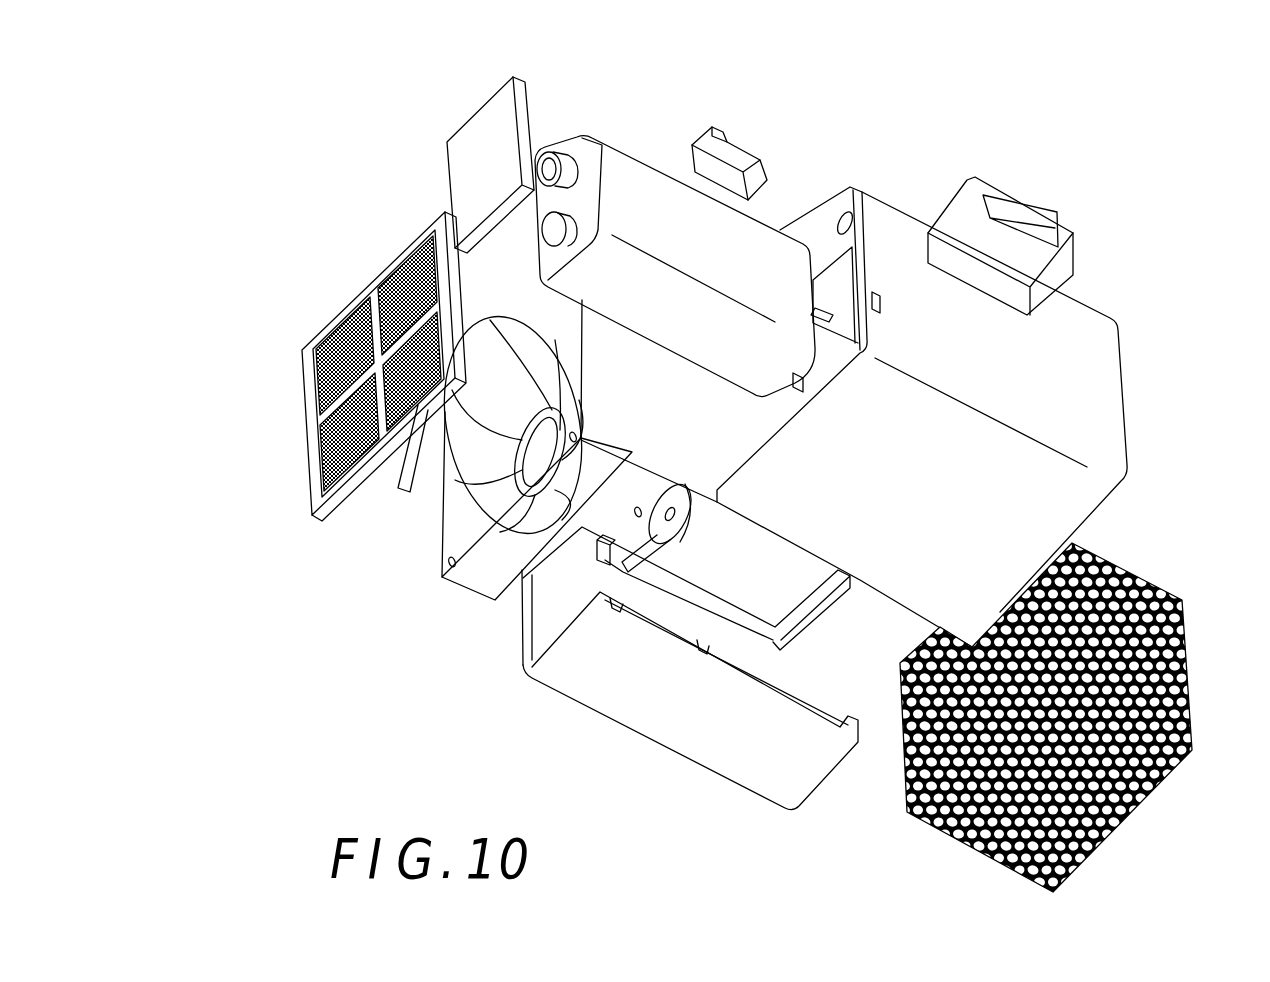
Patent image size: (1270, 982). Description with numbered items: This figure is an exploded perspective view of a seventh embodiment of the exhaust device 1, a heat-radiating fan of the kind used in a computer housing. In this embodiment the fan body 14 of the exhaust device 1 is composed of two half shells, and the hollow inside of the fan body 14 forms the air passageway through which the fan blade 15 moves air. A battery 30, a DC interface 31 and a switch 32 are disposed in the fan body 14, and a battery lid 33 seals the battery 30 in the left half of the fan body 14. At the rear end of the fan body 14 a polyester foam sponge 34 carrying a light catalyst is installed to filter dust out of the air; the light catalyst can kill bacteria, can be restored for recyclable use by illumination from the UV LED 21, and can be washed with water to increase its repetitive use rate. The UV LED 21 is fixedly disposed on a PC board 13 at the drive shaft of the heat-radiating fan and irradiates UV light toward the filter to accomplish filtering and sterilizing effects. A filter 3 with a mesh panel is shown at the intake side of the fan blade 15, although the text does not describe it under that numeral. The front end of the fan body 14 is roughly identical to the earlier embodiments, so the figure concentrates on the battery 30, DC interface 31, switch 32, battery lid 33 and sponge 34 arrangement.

The exhaust device 1 is at (921, 158).
The air filter 3 is at (340, 323).
The PC board 13 is at (668, 545).
The fan body 14 is at (803, 763).
The fan blade 15 is at (485, 573).
The UV LED 21 is at (605, 518).
The battery 30 is at (612, 167).
The DC interface 31 is at (740, 163).
The switch 32 is at (1037, 213).
The battery lid 33 is at (472, 153).
The polyester foam sponge 34 is at (1185, 598).